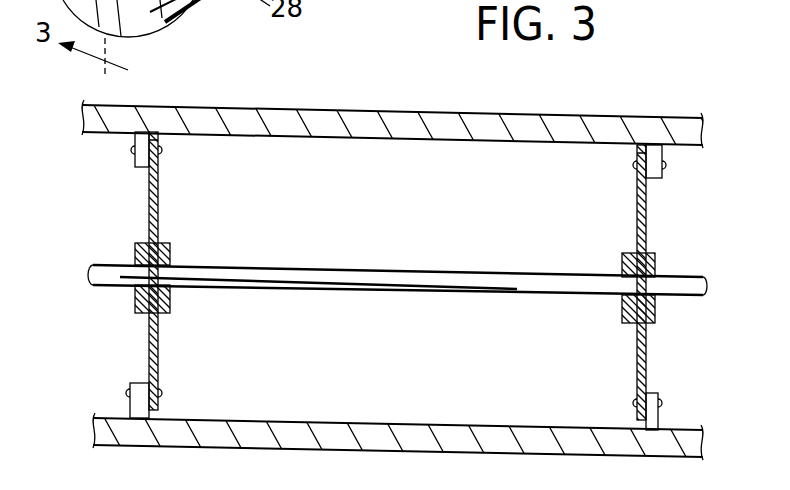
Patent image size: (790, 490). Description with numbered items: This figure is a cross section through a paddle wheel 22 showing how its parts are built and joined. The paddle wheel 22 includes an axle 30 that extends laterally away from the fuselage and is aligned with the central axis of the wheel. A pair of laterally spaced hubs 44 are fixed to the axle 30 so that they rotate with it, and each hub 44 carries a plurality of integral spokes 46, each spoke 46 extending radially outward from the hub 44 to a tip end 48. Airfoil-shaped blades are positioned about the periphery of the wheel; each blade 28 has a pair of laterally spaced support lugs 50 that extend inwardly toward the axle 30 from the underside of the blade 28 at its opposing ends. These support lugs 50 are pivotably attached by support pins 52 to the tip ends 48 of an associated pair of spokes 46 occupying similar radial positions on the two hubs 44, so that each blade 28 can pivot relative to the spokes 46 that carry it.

The paddle wheel 22 is at (661, 104).
The blade 28 is at (518, 113).
The axle 30 is at (410, 272).
The hub 44 is at (170, 244).
The spoke 46 is at (160, 206).
The tip end 48 is at (178, 152).
The support lug 50 is at (137, 167).
The support pin 52 is at (131, 150).